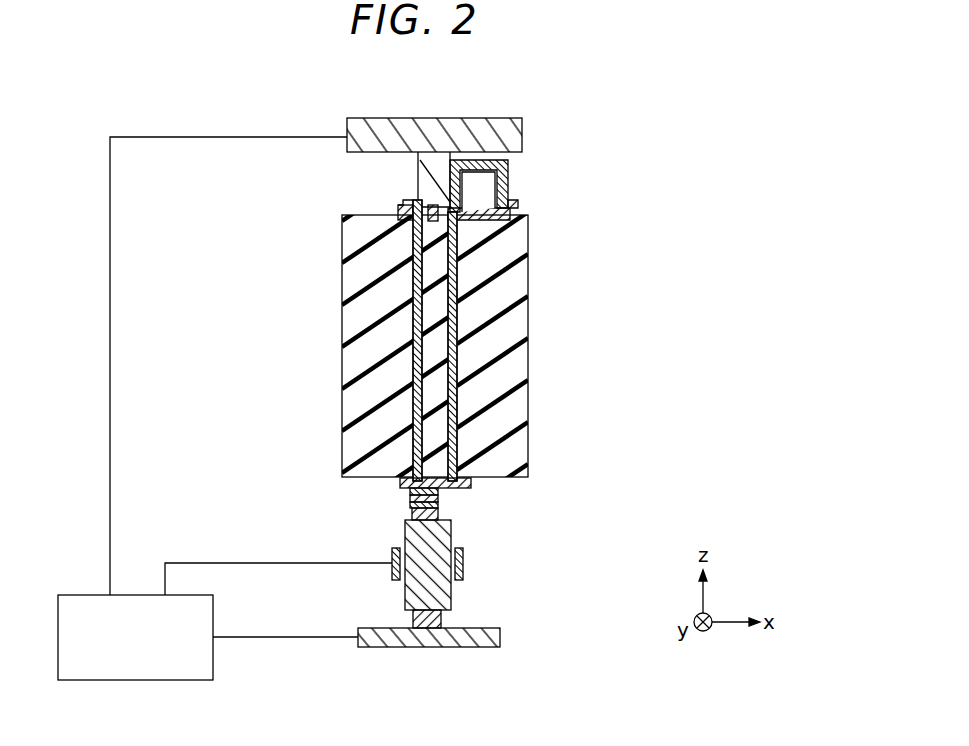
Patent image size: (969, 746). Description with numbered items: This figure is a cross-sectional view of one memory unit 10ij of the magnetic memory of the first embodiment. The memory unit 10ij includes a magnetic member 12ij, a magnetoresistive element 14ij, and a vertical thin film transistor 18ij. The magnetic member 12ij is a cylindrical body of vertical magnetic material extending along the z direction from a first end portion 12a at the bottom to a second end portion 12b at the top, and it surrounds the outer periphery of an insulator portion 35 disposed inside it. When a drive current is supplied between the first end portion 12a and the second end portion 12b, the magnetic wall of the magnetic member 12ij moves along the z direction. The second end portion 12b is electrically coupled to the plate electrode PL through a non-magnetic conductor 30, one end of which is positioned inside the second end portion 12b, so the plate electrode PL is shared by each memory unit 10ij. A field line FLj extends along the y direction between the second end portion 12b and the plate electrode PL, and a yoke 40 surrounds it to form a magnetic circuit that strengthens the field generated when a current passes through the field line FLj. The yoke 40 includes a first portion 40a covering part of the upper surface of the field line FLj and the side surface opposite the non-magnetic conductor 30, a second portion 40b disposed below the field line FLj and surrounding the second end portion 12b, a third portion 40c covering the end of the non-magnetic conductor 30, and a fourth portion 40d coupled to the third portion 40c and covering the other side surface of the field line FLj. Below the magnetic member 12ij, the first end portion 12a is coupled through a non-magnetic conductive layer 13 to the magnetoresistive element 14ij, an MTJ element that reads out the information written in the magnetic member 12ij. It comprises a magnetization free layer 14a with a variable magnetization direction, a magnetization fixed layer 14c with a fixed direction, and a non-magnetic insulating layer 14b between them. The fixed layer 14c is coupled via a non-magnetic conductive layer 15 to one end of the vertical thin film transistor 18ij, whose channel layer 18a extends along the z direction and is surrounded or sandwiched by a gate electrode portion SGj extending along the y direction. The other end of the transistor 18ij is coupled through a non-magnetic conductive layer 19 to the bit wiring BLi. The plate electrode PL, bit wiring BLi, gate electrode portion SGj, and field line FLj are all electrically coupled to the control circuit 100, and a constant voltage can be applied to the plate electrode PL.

The control circuit 100 is at (77, 592).
The plate electrode PL is at (413, 118).
The field line FLj is at (481, 173).
The non-magnetic conductor 30 is at (418, 162).
The yoke 40 is at (479, 156).
The first portion 40a is at (515, 182).
The second portion 40b is at (518, 213).
The third portion 40c is at (405, 207).
The fourth portion 40d is at (458, 182).
The insulator portion 35 is at (428, 278).
The memory unit 10ij is at (464, 329).
The magnetic member 12ij is at (491, 329).
The first end portion 12a is at (462, 468).
The second end portion 12b is at (462, 233).
The non-magnetic conductive layer 13 is at (450, 487).
The magnetoresistive element 14ij is at (340, 507).
The magnetization free layer 14a is at (412, 492).
The non-magnetic insulating layer 14b is at (412, 497).
The magnetization fixed layer 14c is at (412, 502).
The non-magnetic conductive layer 15 is at (440, 513).
The vertical thin film transistor 18ij is at (495, 564).
The channel layer 18a is at (452, 533).
The gate electrode portion SGj is at (465, 562).
The non-magnetic conductive layer 19 is at (443, 618).
The bit wiring BLi is at (500, 637).